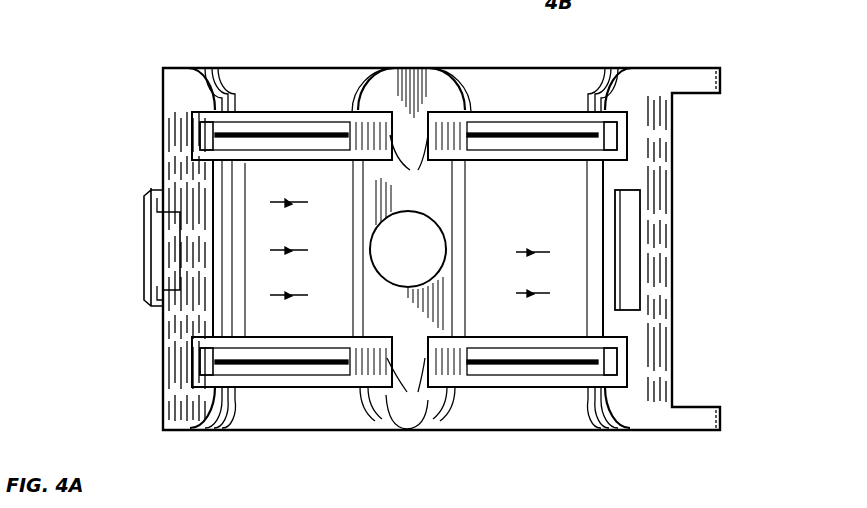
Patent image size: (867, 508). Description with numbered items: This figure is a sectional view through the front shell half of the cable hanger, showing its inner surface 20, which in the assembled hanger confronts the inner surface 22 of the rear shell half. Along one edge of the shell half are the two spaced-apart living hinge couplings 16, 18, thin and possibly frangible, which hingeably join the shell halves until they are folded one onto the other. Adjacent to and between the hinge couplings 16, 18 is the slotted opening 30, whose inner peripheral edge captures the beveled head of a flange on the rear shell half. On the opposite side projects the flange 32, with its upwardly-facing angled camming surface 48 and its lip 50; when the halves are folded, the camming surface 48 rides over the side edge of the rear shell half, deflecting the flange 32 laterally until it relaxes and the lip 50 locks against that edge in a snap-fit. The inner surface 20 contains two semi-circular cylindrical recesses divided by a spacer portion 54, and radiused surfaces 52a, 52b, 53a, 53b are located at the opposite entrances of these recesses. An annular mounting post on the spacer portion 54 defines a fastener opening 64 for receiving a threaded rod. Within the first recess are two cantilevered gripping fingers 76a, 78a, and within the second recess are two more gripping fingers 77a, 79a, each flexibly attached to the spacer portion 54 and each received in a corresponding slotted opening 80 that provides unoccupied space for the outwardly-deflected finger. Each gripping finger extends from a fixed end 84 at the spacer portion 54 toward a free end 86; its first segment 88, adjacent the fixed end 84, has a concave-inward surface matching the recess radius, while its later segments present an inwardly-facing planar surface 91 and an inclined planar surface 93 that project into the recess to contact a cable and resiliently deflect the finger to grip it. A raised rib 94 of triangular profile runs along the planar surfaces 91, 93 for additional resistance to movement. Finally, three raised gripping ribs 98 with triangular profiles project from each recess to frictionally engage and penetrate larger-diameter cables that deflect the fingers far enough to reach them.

The living hinge coupling 16 is at (705, 95).
The living hinge coupling 18 is at (705, 407).
The inner surface 20 is at (258, 255).
The inner surface 22 is at (489, 255).
The slotted opening 30 is at (630, 218).
The flange 32 is at (146, 302).
The camming surface 48 is at (152, 231).
The lip 50 is at (172, 256).
The radiused surface 52a is at (310, 404).
The radiused surface 52b is at (241, 88).
The radiused surface 53a is at (567, 404).
The radiused surface 53b is at (581, 88).
The spacer portion 54 is at (400, 329).
The fastener opening 64 is at (416, 262).
The gripping finger 76a is at (264, 114).
The gripping finger 77a is at (575, 112).
The gripping finger 78a is at (285, 388).
The gripping finger 79a is at (538, 388).
The slotted opening 80 is at (288, 112).
The fixed end 84 is at (402, 282).
The free end 86 is at (208, 134).
The first segment 88 is at (455, 125).
The planar surface 91 is at (305, 118).
The planar surface 93 is at (243, 159).
The raised rib 94 is at (323, 138).
The gripping rib 98 is at (292, 204).